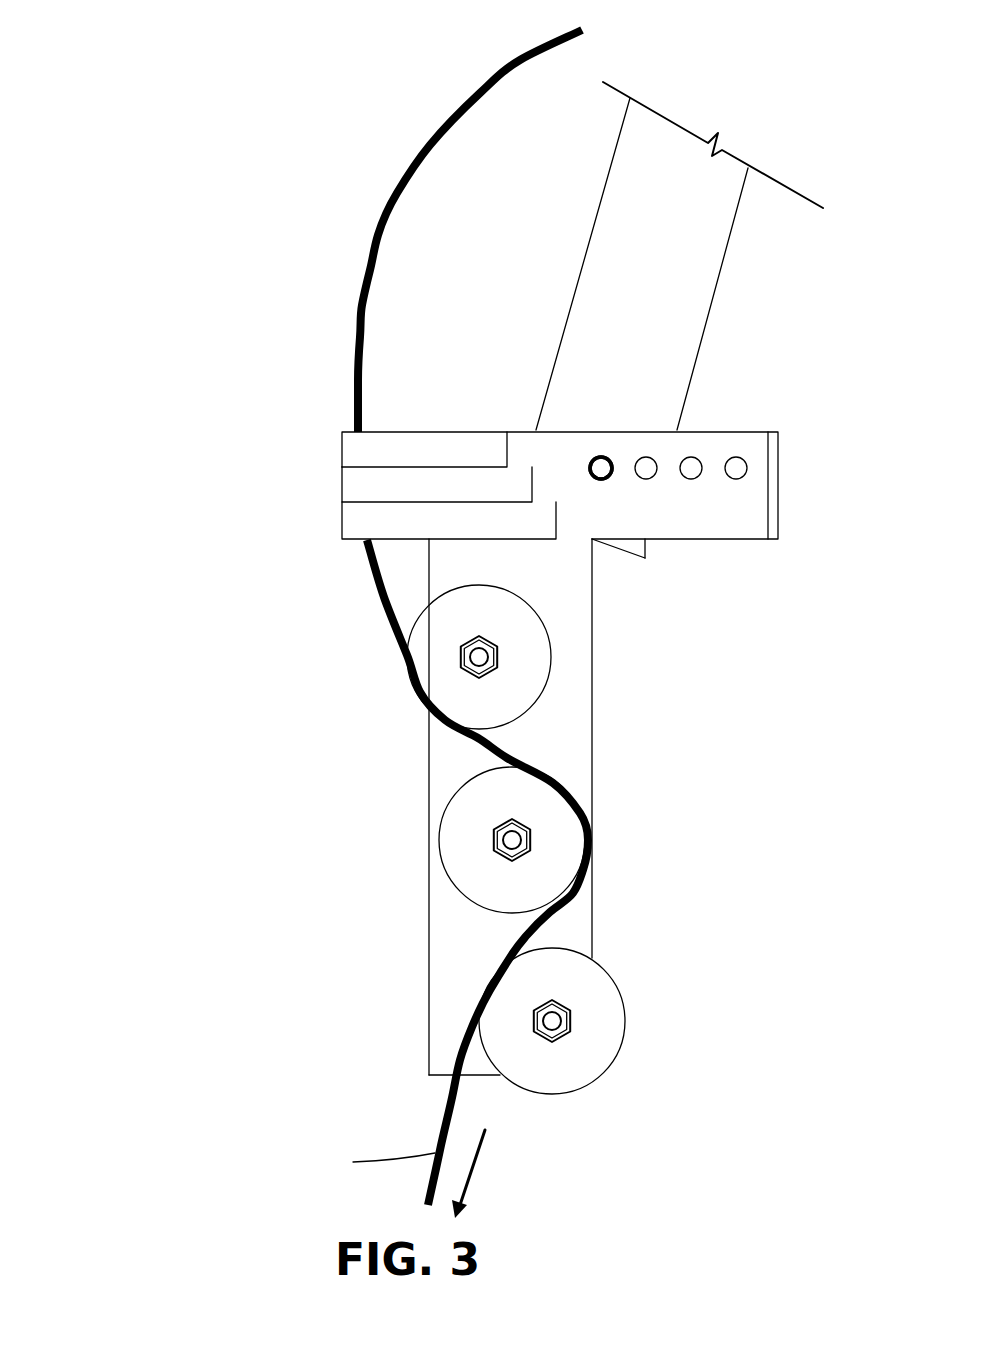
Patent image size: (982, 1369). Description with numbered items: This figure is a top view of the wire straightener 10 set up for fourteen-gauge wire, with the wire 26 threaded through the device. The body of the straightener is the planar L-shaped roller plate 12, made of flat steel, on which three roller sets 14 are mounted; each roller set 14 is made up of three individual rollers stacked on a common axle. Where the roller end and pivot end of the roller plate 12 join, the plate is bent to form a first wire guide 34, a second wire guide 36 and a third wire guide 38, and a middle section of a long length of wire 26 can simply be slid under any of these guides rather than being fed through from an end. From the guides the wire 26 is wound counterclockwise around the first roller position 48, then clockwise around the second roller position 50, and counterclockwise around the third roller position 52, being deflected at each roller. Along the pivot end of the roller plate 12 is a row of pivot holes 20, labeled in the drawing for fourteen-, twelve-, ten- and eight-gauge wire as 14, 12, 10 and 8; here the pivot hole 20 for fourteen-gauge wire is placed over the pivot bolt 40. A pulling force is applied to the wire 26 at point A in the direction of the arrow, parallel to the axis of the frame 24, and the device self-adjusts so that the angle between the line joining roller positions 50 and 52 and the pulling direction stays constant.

The wire straightener 10 is at (240, 240).
The mounting hole 8 is at (736, 481).
The roller plate 12 is at (647, 481).
The roller set 14 is at (602, 481).
The pivot holes 20 is at (735, 456).
The frame 24 is at (605, 268).
The wire 26 is at (365, 272).
The first wire guide 34 is at (360, 527).
The second wire guide 36 is at (342, 485).
The third wire guide 38 is at (342, 433).
The pivot bolt 40 is at (602, 468).
The first roller position 48 is at (520, 667).
The second roller position 50 is at (543, 807).
The third roller position 52 is at (625, 1007).